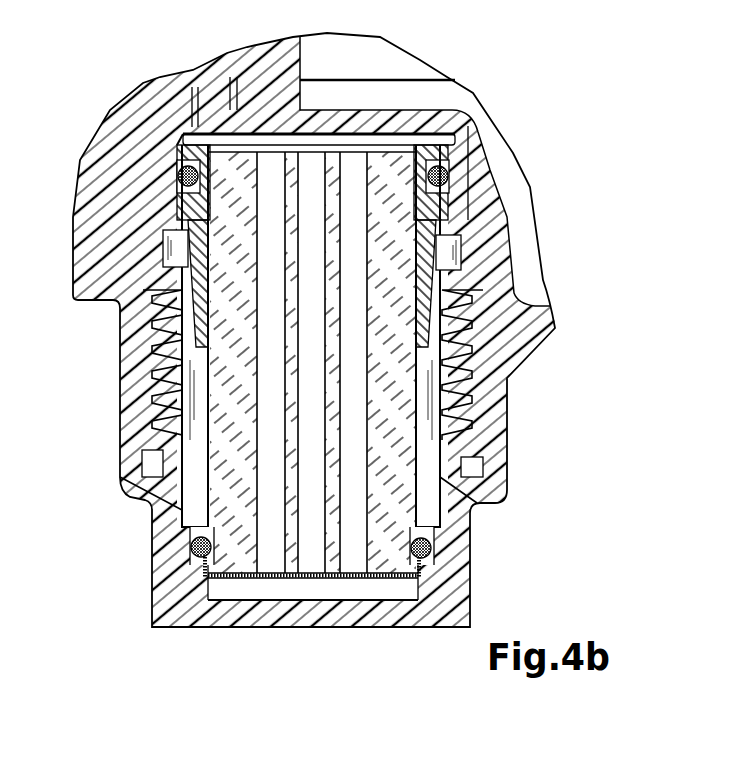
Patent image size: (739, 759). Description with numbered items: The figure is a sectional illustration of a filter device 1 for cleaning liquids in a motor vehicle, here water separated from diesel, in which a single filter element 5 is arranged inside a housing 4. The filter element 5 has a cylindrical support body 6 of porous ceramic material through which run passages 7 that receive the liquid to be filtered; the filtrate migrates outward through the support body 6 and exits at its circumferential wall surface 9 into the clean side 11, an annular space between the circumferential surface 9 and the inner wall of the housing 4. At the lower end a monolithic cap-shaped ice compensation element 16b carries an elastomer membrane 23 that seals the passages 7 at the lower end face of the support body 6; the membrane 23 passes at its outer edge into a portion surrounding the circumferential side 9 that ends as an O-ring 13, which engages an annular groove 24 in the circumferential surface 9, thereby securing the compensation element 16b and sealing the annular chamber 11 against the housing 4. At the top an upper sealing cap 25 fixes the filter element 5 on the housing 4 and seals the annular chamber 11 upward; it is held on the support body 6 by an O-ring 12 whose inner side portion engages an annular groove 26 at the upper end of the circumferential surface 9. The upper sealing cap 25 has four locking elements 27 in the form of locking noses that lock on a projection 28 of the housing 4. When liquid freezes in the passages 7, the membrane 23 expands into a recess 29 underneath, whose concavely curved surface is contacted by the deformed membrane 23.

The filter device 1 is at (541, 166).
The housing 4 is at (163, 383).
The filter element 5 is at (419, 400).
The support body 6 is at (218, 431).
The passages 7 is at (360, 296).
The circumferential wall surface 9 is at (414, 437).
The clean side 11 is at (430, 517).
The first upper sealing element 12 is at (180, 174).
The second lower sealing element 13 is at (191, 549).
The cap-shaped ice compensation element 16b is at (278, 598).
The elastomer membrane 23 is at (345, 580).
The annular groove 24 is at (214, 556).
The upper sealing cap 25 is at (183, 143).
The annular groove 26 is at (220, 178).
The locking elements 27 is at (176, 340).
The projection 28 is at (512, 295).
The recess 29 is at (373, 590).